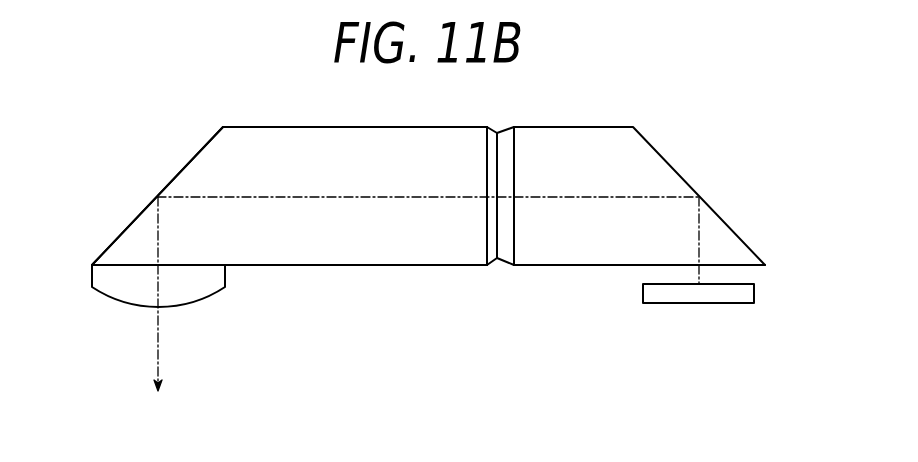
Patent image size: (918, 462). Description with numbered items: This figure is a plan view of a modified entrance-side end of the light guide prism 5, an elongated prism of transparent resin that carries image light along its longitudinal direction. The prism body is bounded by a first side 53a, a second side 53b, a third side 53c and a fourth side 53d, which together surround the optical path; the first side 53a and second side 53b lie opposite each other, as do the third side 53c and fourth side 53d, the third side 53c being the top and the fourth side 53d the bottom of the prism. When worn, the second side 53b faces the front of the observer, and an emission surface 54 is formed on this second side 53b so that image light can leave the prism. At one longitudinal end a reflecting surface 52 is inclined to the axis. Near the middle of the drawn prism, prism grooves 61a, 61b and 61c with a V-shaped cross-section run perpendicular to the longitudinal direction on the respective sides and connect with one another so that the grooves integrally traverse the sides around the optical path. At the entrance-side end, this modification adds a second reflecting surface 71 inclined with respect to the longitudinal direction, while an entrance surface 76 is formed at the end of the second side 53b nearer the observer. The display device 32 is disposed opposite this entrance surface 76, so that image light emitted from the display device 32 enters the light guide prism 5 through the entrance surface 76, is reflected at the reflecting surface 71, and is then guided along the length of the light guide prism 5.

The light guide prism 5 is at (432, 295).
The display device 32 is at (700, 303).
The reflecting surface 52 is at (182, 172).
The first side 53a is at (411, 127).
The second side 53b is at (388, 265).
The third side 53c is at (307, 242).
The fourth side 53d is at (267, 163).
The emission surface 54 is at (110, 296).
The prism groove 61a is at (496, 132).
The prism groove 61b is at (500, 264).
The prism groove 61c is at (500, 177).
The reflecting surface 71 is at (668, 162).
The entrance surface 76 is at (715, 264).